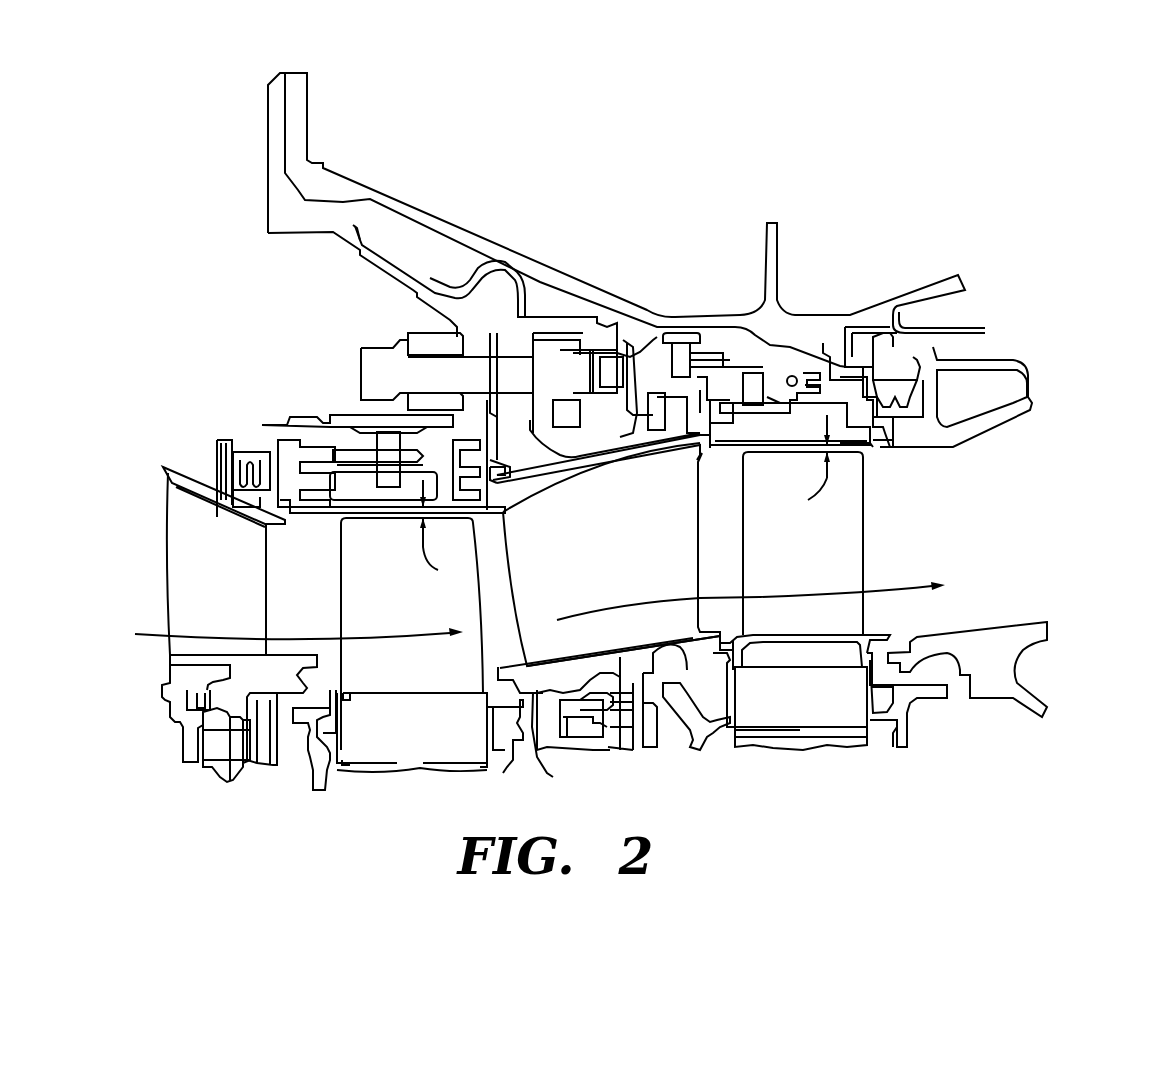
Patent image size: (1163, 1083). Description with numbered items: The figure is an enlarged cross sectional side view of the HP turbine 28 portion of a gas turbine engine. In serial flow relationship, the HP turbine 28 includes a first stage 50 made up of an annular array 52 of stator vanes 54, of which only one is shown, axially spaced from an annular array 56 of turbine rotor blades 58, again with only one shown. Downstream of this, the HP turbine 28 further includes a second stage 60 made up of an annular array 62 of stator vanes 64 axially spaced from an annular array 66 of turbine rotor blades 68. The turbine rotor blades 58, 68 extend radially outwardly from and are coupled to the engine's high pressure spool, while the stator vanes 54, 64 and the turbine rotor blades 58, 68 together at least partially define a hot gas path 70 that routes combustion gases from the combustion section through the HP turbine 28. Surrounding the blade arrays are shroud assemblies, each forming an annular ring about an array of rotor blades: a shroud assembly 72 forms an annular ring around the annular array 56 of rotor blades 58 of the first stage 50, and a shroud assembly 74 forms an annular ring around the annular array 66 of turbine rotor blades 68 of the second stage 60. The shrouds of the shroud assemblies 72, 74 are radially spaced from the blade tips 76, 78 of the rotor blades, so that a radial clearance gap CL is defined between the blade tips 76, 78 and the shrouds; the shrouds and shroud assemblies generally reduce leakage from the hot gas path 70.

The HP turbine 28 is at (731, 183).
The first stage 50 is at (303, 817).
The annular array of stator vanes 52 is at (158, 540).
The stator vane 54 is at (200, 587).
The annular array of turbine rotor blades 56 is at (330, 600).
The turbine rotor blade 58 is at (385, 619).
The second stage 60 is at (630, 778).
The annular array of stator vanes 62 is at (512, 553).
The stator vane 64 is at (591, 559).
The annular array of turbine rotor blades 66 is at (880, 566).
The turbine rotor blade 68 is at (785, 571).
The hot gas path 70 is at (150, 632).
The shroud assembly 72 is at (300, 395).
The shroud assembly 74 is at (812, 370).
The blade tip 76 is at (367, 520).
The blade tip 78 is at (798, 457).